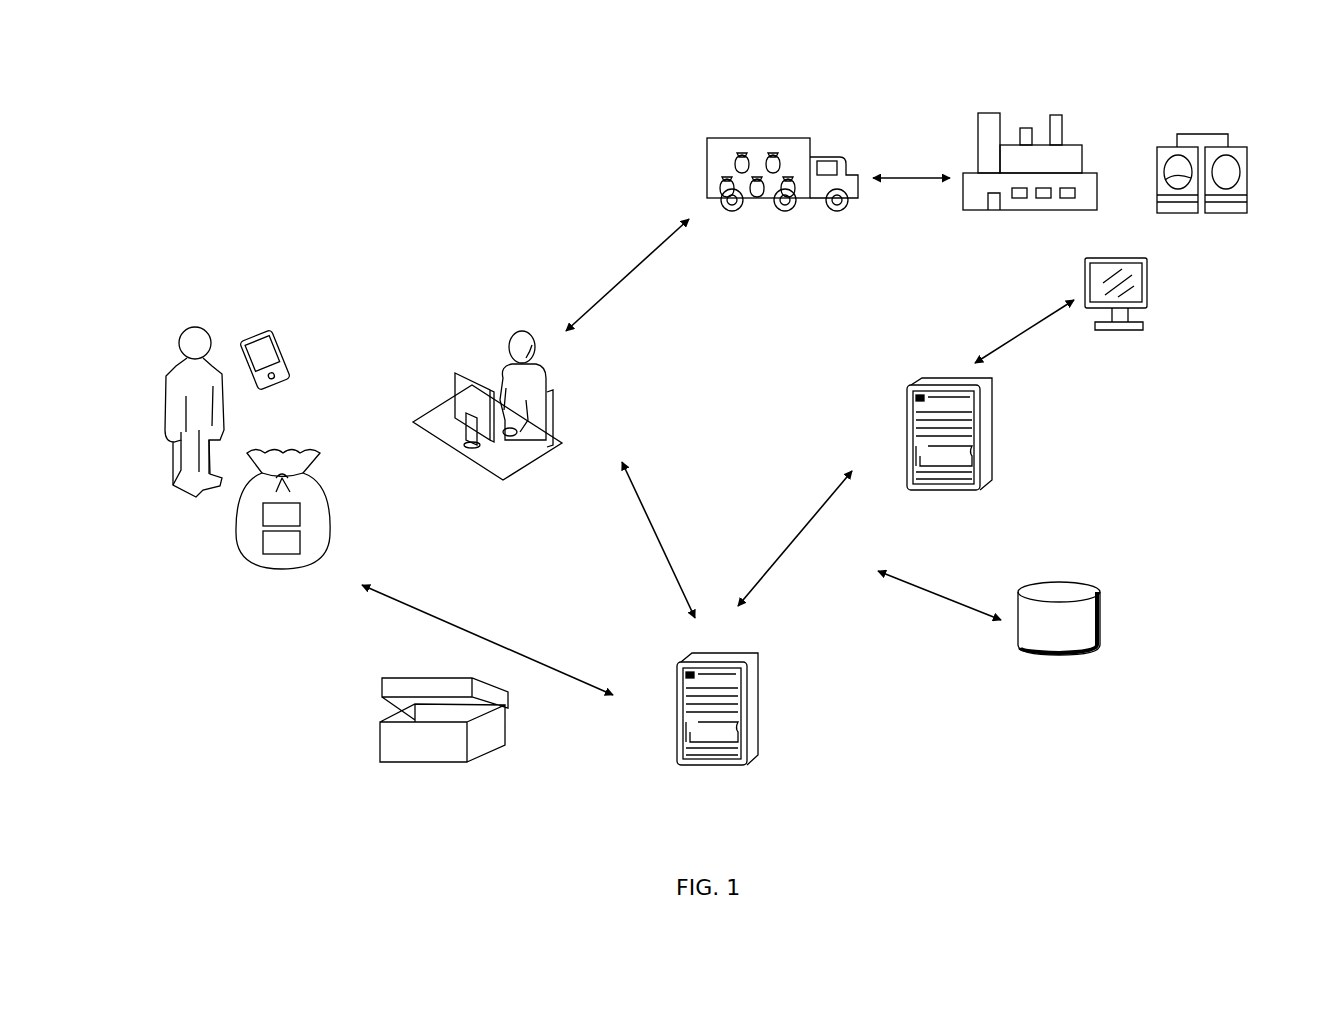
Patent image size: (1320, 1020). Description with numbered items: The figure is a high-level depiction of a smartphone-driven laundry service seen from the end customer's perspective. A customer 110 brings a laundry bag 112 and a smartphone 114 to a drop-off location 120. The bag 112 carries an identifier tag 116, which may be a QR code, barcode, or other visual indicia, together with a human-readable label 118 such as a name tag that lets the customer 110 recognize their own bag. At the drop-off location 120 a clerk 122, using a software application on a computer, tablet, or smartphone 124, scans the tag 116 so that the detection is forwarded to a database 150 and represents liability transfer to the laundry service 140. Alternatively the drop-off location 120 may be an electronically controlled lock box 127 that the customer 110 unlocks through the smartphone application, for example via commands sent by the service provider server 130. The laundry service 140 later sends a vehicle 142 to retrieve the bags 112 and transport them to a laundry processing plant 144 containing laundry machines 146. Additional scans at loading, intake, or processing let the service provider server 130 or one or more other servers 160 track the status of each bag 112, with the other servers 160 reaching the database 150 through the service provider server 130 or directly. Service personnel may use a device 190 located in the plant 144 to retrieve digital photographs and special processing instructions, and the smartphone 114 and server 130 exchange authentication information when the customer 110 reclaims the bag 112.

The customer 110 is at (166, 398).
The laundry bag 112 is at (317, 510).
The smartphone 114 is at (286, 349).
The identifier tag 116 is at (300, 542).
The human-readable label 118 is at (300, 515).
The drop-off location 120 is at (496, 382).
The clerk 122 is at (546, 363).
The computer, tablet, or smartphone 124 is at (455, 391).
The lock box 127 is at (380, 746).
The service provider server 130 is at (758, 700).
The laundry service 140 is at (1086, 84).
The vehicle 142 is at (765, 137).
The laundry processing plant 144 is at (1036, 210).
The laundry machines 146 is at (1232, 213).
The database 150 is at (1101, 620).
The other server 160 is at (992, 425).
The device 190 is at (1148, 283).